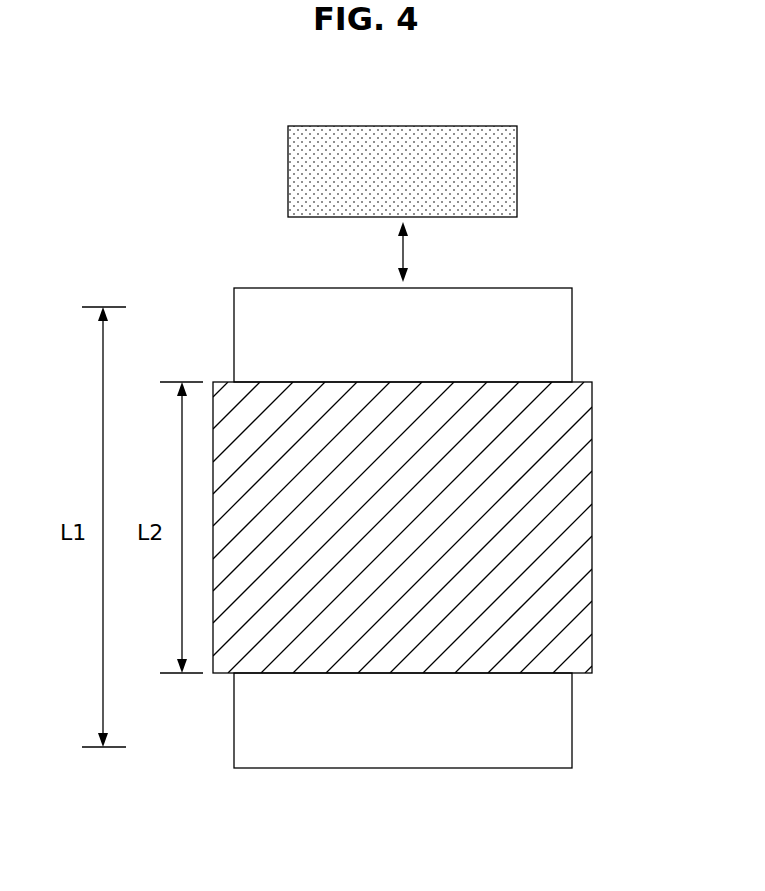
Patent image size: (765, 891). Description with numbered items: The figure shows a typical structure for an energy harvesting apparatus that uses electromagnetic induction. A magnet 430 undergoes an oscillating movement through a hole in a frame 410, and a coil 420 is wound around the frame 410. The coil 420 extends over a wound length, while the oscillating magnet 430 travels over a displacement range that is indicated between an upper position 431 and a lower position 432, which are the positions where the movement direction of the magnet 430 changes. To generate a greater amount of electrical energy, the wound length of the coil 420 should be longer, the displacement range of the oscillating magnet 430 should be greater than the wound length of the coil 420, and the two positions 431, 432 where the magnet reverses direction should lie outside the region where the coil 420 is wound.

The magnet 430 is at (483, 126).
The frame 410 is at (555, 288).
The coil 420 is at (580, 382).
The position where the movement direction of the magnet changes 431 is at (103, 305).
The position where the movement direction of the magnet changes 432 is at (103, 749).